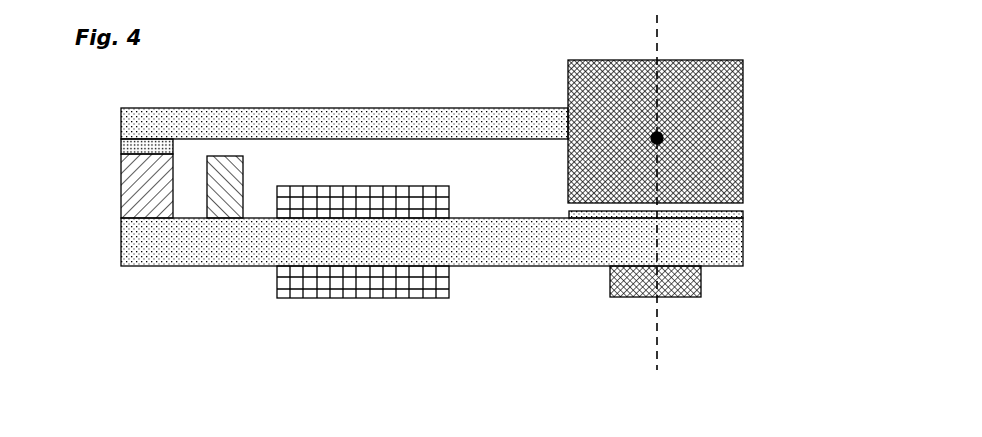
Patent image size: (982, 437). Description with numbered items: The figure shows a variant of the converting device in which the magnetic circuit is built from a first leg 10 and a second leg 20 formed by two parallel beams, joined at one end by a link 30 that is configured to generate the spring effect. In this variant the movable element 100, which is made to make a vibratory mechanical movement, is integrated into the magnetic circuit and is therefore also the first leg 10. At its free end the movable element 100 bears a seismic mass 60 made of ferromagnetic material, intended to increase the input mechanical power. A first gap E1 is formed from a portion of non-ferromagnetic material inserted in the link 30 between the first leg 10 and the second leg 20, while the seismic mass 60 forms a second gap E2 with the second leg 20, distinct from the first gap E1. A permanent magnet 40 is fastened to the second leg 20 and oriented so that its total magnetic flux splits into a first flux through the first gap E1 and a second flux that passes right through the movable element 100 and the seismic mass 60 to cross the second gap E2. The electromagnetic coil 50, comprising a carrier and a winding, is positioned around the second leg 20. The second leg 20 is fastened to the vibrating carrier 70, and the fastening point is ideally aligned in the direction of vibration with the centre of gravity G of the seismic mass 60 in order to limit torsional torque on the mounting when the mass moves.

The movable element 100 is at (500, 108).
The first leg 10 is at (383, 118).
The second leg 20 is at (522, 258).
The link 30 is at (132, 180).
The permanent magnet 40 is at (227, 173).
The electromagnetic coil 50 is at (318, 287).
The seismic mass 60 is at (692, 80).
The vibrating carrier 70 is at (695, 285).
The first gap E1 is at (133, 152).
The second gap E2 is at (720, 208).
The centre of gravity G is at (665, 192).